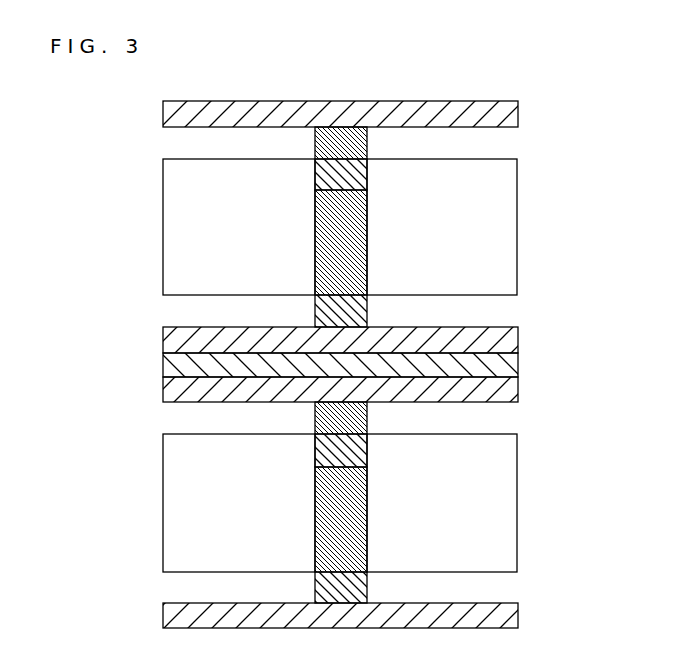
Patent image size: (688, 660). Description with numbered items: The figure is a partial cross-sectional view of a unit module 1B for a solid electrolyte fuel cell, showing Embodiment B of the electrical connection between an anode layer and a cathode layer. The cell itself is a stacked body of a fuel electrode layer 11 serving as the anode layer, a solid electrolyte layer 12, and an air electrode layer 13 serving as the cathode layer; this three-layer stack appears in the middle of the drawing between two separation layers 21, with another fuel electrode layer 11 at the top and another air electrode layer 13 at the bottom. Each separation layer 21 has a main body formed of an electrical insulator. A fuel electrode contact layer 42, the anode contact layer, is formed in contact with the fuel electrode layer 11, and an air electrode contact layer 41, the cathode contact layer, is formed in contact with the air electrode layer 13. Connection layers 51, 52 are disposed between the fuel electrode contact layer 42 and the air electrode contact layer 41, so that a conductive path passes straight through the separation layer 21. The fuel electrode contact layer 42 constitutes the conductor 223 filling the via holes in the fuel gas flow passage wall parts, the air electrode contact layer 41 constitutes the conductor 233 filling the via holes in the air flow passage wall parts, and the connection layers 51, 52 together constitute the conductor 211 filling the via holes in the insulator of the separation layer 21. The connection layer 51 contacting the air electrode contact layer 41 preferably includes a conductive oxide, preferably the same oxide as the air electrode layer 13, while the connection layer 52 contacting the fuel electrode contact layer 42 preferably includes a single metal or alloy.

The fuel electrode layer 11 is at (500, 116).
The solid electrolyte layer 12 is at (500, 364).
The air electrode layer 13 is at (500, 337).
The separation layer 21 is at (502, 201).
The air electrode contact layer 41 is at (350, 308).
The fuel electrode contact layer 42 is at (350, 141).
The connection layer 51 is at (367, 238).
The connection layer 52 is at (350, 174).
The conductor 211 is at (311, 159).
The conductor 223 is at (311, 127).
The conductor 233 is at (311, 295).
The unit module 1B is at (589, 303).